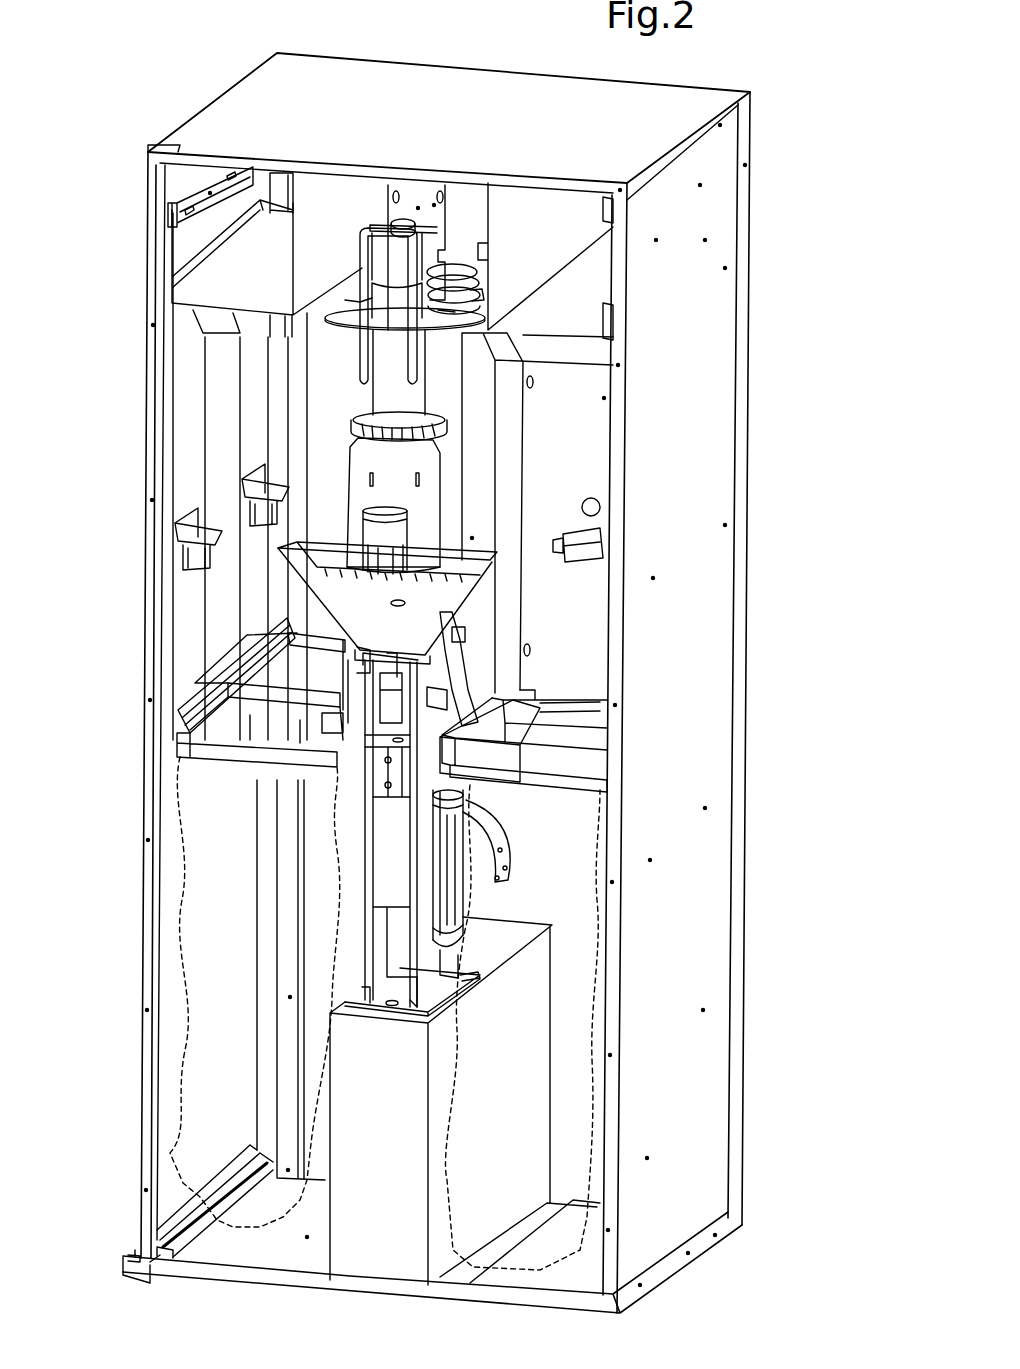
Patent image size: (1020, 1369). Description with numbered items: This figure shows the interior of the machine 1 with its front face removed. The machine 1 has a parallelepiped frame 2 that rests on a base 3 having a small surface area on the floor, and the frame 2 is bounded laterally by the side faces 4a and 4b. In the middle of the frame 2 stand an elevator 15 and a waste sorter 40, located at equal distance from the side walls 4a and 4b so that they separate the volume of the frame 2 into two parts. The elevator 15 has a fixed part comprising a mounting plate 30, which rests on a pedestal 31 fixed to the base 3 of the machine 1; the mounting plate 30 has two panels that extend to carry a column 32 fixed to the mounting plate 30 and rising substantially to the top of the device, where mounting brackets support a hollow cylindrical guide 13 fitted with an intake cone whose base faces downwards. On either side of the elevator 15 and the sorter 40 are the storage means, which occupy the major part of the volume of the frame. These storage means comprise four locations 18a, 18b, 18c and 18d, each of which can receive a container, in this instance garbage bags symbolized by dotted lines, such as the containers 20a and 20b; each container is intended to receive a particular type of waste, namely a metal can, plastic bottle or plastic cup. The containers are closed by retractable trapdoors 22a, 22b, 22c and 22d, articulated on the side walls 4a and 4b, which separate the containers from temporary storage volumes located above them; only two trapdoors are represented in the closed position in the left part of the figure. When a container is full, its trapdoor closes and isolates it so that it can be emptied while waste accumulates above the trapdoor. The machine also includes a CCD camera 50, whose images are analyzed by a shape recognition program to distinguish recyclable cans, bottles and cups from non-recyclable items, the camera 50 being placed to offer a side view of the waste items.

The machine 1 is at (792, 268).
The frame 2 is at (722, 365).
The base 3 is at (672, 1277).
The side face 4a is at (720, 905).
The side face 4b is at (122, 782).
The hollow cylindrical guide 13 is at (380, 400).
The elevator 15 is at (463, 982).
The location 18a is at (580, 757).
The location 18b is at (236, 722).
The location 18c is at (280, 665).
The location 18d is at (580, 712).
The container 20a is at (602, 923).
The container 20b is at (187, 903).
The retractable trapdoor 22a is at (540, 775).
The retractable trapdoor 22b is at (228, 727).
The retractable trapdoor 22c is at (227, 705).
The retractable trapdoor 22d is at (595, 718).
The mounting plate 30 is at (355, 990).
The pedestal 31 is at (445, 1262).
The column 32 is at (424, 977).
The waste sorter 40 is at (348, 238).
The CCD camera 50 is at (600, 548).